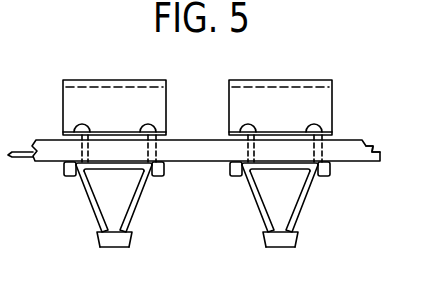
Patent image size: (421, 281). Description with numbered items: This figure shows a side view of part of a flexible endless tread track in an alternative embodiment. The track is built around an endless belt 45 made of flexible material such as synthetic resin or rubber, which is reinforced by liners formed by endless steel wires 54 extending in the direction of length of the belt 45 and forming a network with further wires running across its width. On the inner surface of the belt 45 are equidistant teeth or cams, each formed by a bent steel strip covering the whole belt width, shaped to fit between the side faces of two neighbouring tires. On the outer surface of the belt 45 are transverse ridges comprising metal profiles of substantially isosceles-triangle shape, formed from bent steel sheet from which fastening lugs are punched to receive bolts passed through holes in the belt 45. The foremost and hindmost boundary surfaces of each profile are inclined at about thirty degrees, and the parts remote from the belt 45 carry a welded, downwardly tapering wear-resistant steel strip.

The endless belt 45 is at (362, 140).
The endless steel wires 54 is at (380, 150).